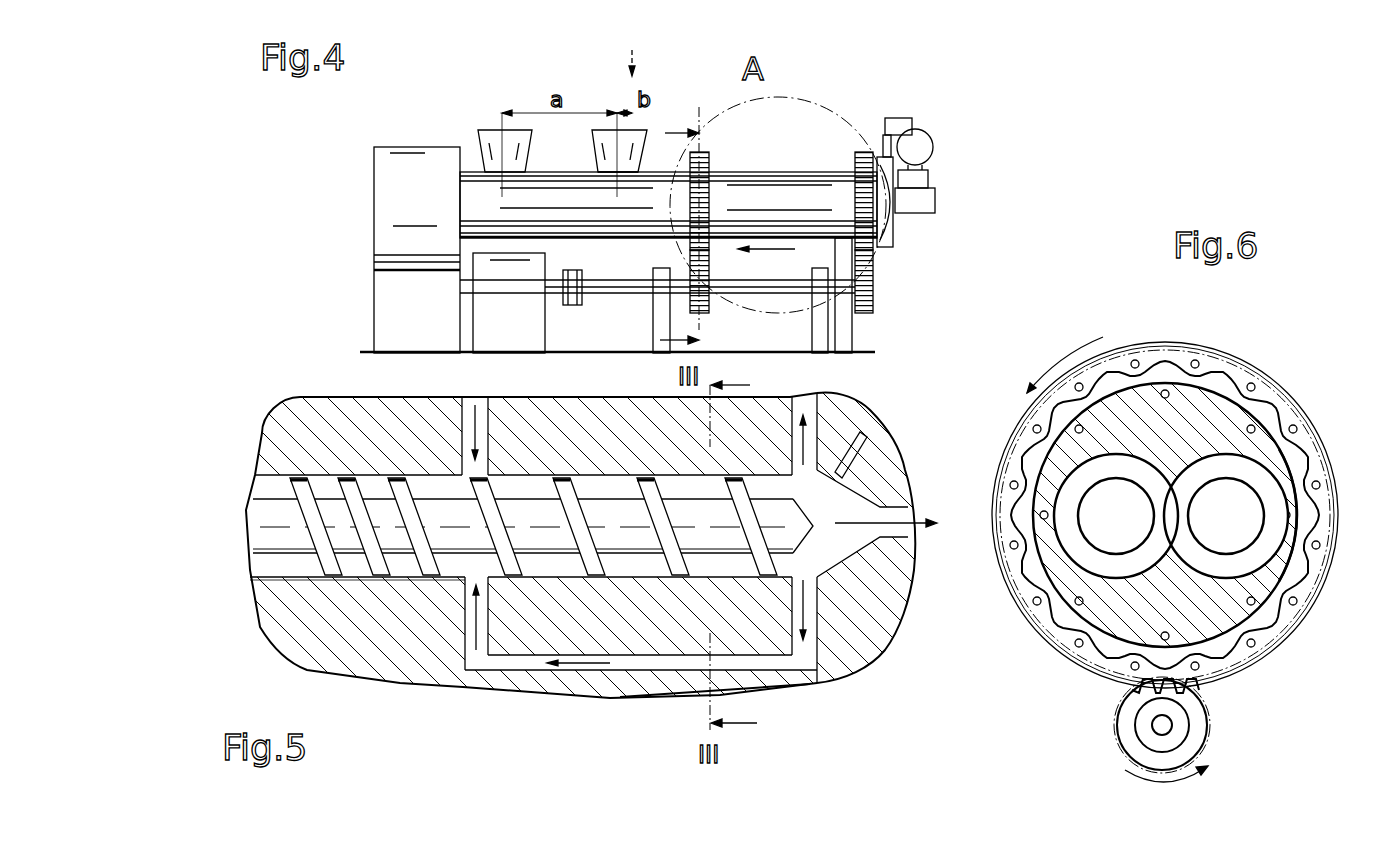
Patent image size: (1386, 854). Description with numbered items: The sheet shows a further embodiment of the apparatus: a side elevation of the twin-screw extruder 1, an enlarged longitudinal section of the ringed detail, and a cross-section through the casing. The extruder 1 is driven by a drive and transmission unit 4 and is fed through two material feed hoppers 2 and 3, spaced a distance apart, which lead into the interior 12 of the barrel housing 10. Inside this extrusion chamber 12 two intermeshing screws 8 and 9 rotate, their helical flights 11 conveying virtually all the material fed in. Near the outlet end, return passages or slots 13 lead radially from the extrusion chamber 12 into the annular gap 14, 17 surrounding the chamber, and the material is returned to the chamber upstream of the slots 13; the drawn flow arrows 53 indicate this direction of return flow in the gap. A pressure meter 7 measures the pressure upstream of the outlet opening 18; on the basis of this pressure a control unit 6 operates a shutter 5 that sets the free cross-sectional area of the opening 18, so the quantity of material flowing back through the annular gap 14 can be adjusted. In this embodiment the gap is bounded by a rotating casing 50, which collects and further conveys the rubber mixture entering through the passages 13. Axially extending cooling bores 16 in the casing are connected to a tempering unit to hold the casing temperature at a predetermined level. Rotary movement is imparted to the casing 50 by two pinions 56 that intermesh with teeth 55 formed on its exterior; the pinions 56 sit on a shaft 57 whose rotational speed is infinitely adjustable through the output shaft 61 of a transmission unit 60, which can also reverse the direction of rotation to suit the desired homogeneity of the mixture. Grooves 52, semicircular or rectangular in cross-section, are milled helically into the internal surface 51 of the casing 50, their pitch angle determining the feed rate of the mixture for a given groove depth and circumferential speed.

In FIG. 4, the twin-screw extruder 1 is at (633, 49).
In FIG. 4, the material feed hopper 2 is at (487, 148).
In FIG. 4, the material feed hopper 3 is at (610, 163).
In FIG. 4, the drive and transmission unit 4 is at (415, 185).
In FIG. 4, the shutter 5 is at (918, 200).
In FIG. 4, the control unit 6 is at (925, 140).
In FIG. 4, the pressure meter 7 is at (879, 160).
In FIG. 5, the pressure meter 7 is at (868, 447).
In FIG. 5, the screw 8 is at (640, 543).
In FIG. 6, the screw 8 is at (1113, 543).
In FIG. 6, the screw 9 is at (1215, 500).
In FIG. 5, the barrel housing 10 is at (348, 447).
In FIG. 6, the barrel housing 10 is at (1050, 467).
In FIG. 5, the helical flights 11 is at (378, 566).
In FIG. 6, the helical flights 11 is at (1100, 565).
In FIG. 5, the interior of the barrel (extrusion chamber) 12 is at (492, 568).
In FIG. 5, the return passages or slots 13 is at (808, 410).
In FIG. 5, the annular gap 14 is at (610, 668).
In FIG. 6, the annular gap 14 is at (1302, 492).
In FIG. 6, the cooling bores 16 is at (1165, 394).
In FIG. 5, the annular gap 17 is at (463, 400).
In FIG. 5, the outlet opening 18 is at (890, 530).
In FIG. 4, the rotating casing 50 is at (780, 183).
In FIG. 5, the rotating casing 50 is at (763, 687).
In FIG. 6, the rotating casing 50 is at (1012, 563).
In FIG. 6, the internal surface of the casing 51 is at (1126, 380).
In FIG. 6, the grooves 52 is at (1050, 402).
In FIG. 4, the flow direction arrow 53 is at (842, 262).
In FIG. 5, the flow direction arrow 53 is at (583, 665).
In FIG. 4, the teeth 55 is at (700, 152).
In FIG. 6, the teeth 55 is at (1253, 367).
In FIG. 4, the drive pinions 56 is at (853, 287).
In FIG. 6, the drive pinions 56 is at (1180, 722).
In FIG. 4, the shaft 57 is at (633, 285).
In FIG. 6, the shaft 57 is at (1166, 730).
In FIG. 4, the transmission unit 60 is at (498, 295).
In FIG. 4, the output shaft 61 is at (543, 290).